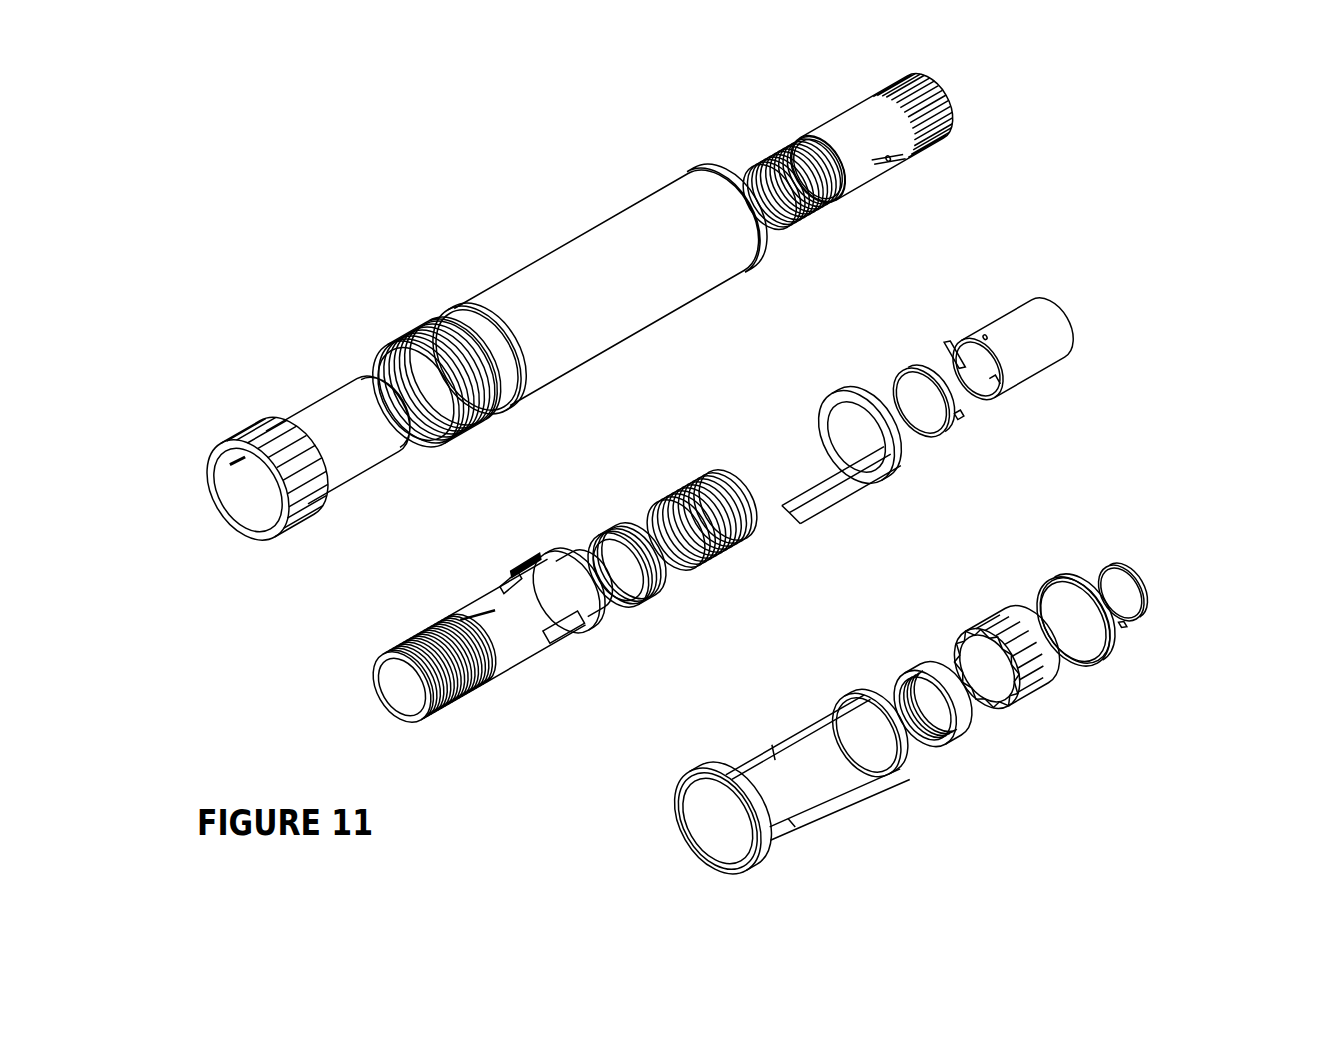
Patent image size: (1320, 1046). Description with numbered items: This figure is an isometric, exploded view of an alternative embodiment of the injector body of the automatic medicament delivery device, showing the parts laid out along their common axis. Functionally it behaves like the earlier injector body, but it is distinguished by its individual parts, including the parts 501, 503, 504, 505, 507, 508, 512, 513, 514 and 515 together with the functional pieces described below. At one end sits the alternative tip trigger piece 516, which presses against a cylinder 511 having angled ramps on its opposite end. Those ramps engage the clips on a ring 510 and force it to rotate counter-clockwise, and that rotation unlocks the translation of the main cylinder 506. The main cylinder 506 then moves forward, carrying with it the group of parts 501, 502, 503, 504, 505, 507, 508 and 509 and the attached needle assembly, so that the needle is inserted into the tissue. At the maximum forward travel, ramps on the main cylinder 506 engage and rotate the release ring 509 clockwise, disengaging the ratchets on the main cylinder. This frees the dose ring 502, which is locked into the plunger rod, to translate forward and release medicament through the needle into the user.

The injector body part 501 is at (823, 798).
The dose ring 502 is at (970, 732).
The injector body part 503 is at (1042, 682).
The injector body part 504 is at (1117, 655).
The injector body part 505 is at (1152, 618).
The main cylinder 506 is at (512, 650).
The injector body part 507 is at (663, 587).
The injector body part 508 is at (727, 540).
The release ring 509 is at (852, 470).
The ring 510 is at (950, 420).
The cylinder 511 is at (1028, 352).
The injector body part 512 is at (325, 460).
The injector body part 513 is at (473, 390).
The injector body part 514 is at (597, 307).
The injector body part 515 is at (797, 188).
The tip trigger piece 516 is at (917, 127).